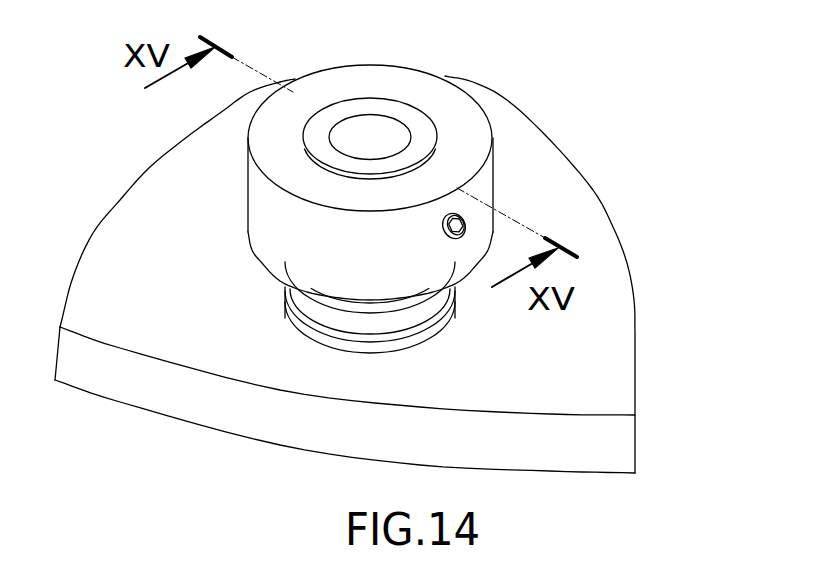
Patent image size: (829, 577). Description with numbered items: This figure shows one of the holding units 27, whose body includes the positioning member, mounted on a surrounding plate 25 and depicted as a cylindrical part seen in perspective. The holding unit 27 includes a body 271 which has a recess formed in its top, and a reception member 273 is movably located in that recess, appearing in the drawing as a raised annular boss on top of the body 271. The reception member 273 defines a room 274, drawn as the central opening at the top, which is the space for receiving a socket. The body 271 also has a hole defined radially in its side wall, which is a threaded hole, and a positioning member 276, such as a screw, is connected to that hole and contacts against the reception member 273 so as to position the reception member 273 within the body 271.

The base plate 25 is at (181, 335).
The holding unit 27 is at (368, 183).
The body 271 is at (257, 212).
The reception member 273 is at (425, 132).
The room 274 is at (359, 122).
The positioning member 276 is at (452, 243).